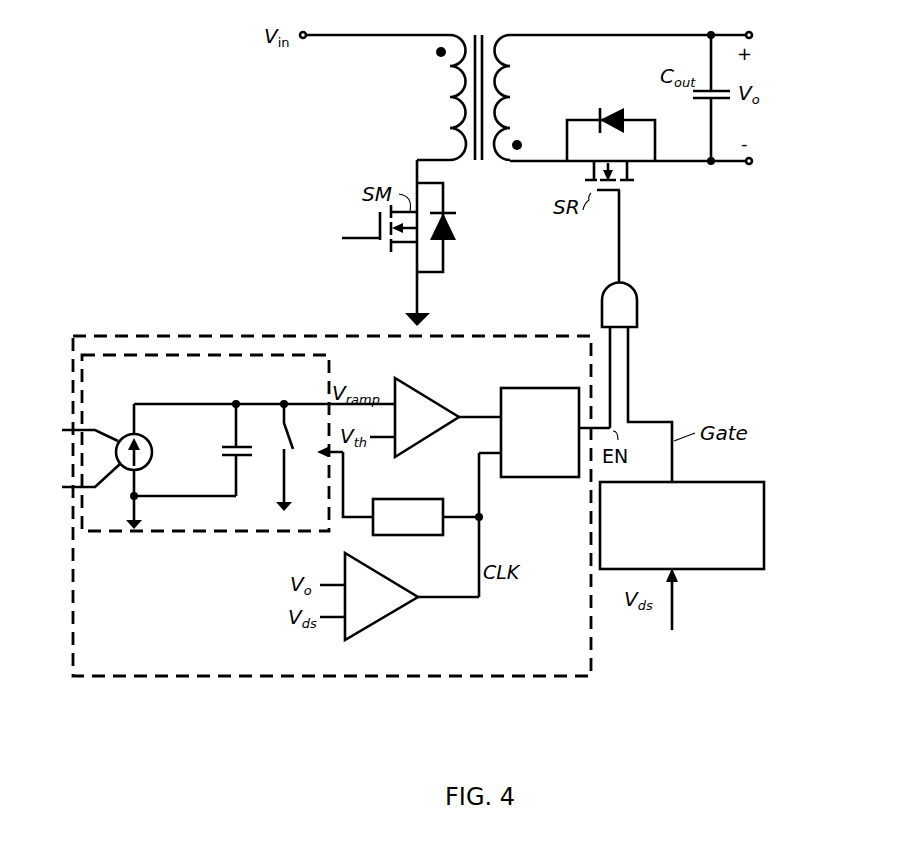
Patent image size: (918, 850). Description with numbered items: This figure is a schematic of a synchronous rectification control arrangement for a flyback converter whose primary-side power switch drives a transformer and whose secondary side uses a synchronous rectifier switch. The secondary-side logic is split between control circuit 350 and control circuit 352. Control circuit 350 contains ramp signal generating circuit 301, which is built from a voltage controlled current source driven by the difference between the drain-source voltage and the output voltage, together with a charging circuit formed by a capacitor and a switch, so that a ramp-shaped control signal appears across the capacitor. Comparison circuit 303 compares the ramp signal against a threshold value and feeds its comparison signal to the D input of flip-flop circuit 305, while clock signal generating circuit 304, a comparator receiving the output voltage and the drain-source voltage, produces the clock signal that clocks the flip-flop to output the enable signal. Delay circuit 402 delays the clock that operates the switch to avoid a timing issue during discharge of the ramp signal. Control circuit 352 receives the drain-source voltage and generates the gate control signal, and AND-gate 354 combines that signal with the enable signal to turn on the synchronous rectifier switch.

The ramp signal generating circuit 301 is at (186, 532).
The comparison circuit 303 is at (430, 421).
The clock signal generating circuit 304 is at (381, 596).
The flip-flop circuit 305 is at (533, 388).
The control circuit 350 is at (332, 506).
The control circuit 352 is at (682, 525).
The AND-gate 354 is at (627, 310).
The delay circuit 402 is at (385, 537).